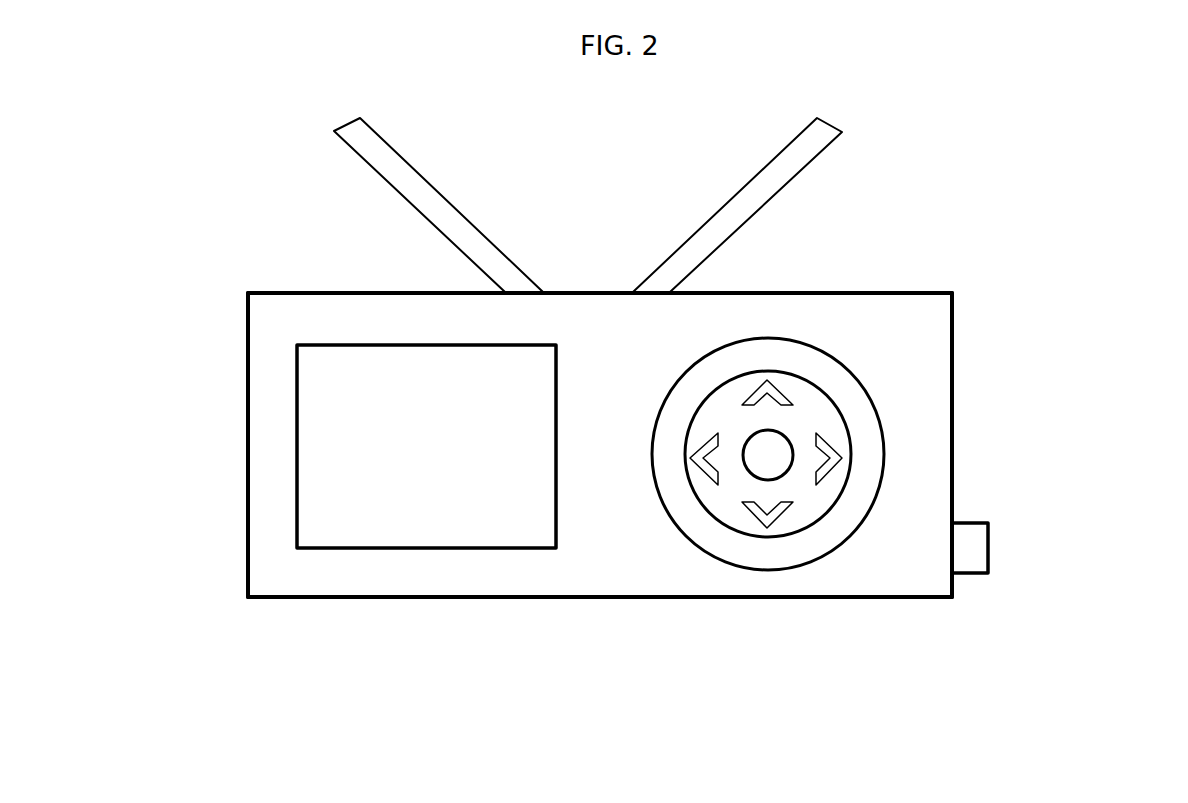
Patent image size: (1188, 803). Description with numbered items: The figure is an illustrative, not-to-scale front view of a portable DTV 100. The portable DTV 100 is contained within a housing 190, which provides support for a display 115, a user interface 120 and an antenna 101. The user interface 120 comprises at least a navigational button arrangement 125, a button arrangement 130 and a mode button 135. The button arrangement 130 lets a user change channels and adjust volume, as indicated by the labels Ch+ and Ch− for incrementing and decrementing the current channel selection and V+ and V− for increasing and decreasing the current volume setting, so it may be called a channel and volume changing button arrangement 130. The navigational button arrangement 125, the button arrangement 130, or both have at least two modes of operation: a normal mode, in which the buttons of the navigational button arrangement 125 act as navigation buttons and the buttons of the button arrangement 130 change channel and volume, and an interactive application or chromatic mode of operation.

The portable DTV 100 is at (865, 623).
The antenna 101 is at (657, 256).
The display 115 is at (285, 408).
The user interface 120 is at (1168, 375).
The navigational button arrangement 125 is at (802, 412).
The button arrangement 130 is at (905, 418).
The mode button 135 is at (1000, 497).
The housing 190 is at (605, 560).